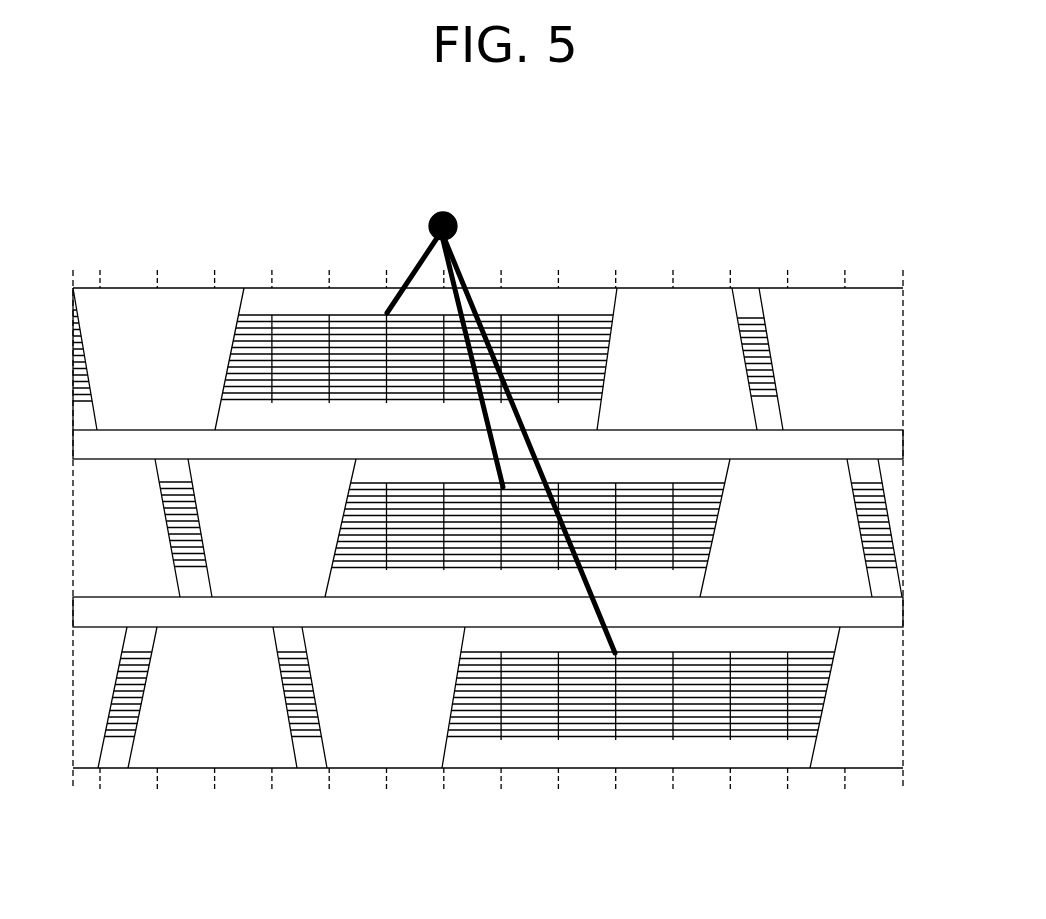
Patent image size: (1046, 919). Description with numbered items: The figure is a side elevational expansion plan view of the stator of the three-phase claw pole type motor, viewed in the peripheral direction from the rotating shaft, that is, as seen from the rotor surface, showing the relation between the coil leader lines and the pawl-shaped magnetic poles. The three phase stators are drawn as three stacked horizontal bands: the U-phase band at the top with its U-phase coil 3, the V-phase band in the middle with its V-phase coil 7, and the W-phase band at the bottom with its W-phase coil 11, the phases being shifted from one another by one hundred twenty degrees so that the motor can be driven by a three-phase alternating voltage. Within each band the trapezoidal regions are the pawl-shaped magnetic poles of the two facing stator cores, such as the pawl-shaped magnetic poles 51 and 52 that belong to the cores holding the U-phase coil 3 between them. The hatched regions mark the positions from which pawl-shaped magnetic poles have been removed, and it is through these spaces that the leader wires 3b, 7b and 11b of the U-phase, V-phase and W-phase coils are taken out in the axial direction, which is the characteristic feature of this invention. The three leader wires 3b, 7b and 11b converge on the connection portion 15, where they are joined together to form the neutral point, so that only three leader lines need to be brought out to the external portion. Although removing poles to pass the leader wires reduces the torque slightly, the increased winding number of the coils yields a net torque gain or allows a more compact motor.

The U-phase coil 3 is at (330, 327).
The leader wire 3b is at (417, 262).
The V-phase coil 7 is at (692, 558).
The leader wire 7b is at (463, 301).
The W-phase coil 11 is at (783, 740).
The leader wire 11b is at (482, 310).
The connection portion 15 is at (440, 212).
The pawl-shaped magnetic pole 51 is at (870, 305).
The pawl-shaped magnetic pole 52 is at (653, 300).